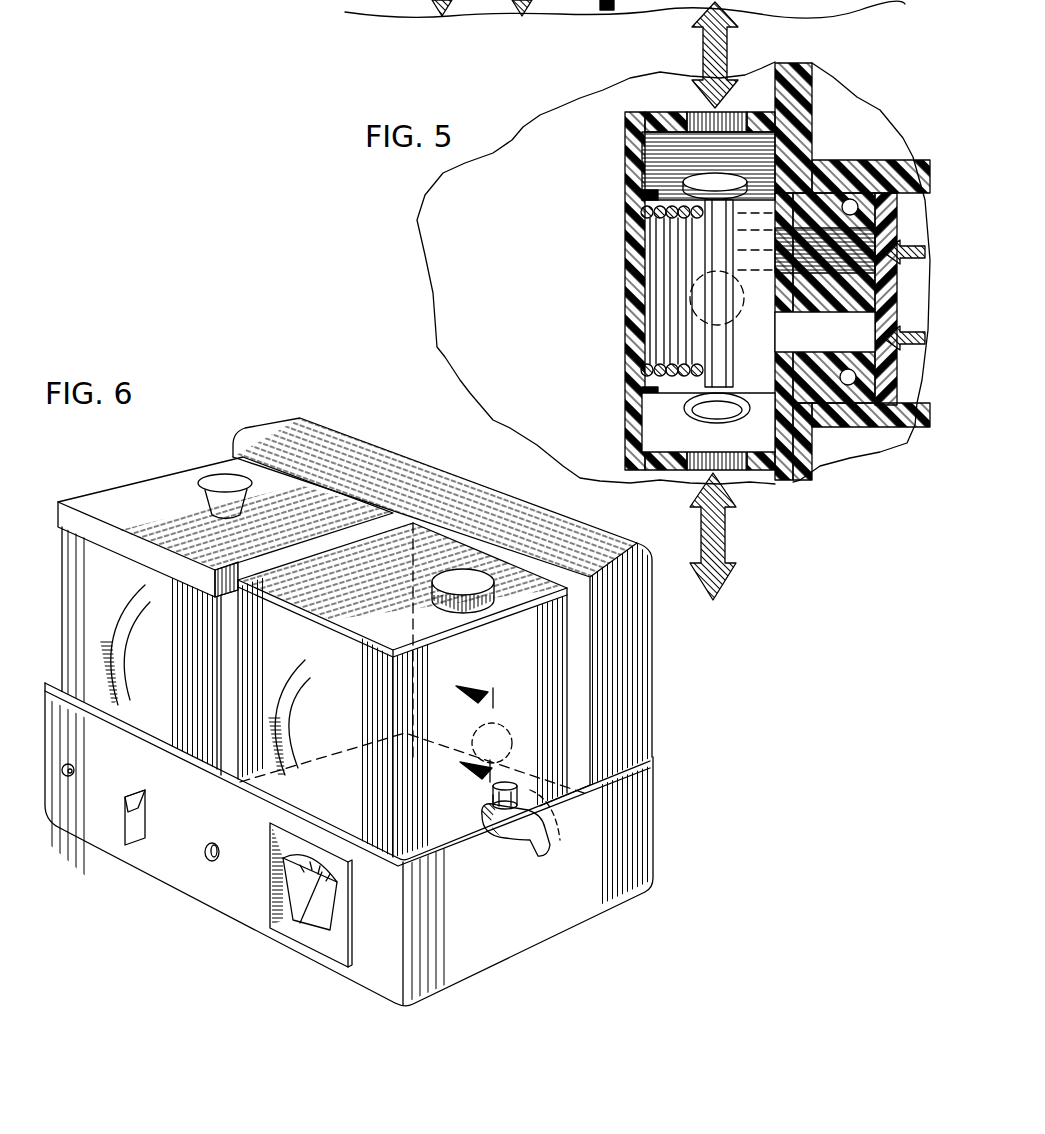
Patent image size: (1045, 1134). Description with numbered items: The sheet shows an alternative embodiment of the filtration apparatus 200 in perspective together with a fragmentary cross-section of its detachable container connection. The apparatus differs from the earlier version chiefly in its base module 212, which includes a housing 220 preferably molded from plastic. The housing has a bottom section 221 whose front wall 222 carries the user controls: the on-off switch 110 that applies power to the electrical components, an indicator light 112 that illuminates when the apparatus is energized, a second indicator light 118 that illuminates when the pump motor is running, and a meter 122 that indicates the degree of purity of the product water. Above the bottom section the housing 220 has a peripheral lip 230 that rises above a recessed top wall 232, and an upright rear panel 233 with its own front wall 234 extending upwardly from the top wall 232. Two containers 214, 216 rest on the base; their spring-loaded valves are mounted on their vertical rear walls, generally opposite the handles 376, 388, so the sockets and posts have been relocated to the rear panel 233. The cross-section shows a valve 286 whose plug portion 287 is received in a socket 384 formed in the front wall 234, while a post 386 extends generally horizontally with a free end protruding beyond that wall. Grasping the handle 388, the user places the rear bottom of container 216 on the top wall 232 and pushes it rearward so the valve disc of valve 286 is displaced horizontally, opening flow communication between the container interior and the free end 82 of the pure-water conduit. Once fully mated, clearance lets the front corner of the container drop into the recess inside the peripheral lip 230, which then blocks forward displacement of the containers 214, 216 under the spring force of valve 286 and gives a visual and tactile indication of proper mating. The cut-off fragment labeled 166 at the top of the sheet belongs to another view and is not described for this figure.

In FIG. 5, the free end of conduit 82 is at (822, 170).
In FIG. 5, the nozzle 166 is at (625, 9).
In FIG. 6, the filtration apparatus 200 is at (442, 578).
In FIG. 6, the base module 212 is at (388, 815).
In FIG. 6, the container 214 is at (201, 616).
In FIG. 5, the container 216 is at (772, 70).
In FIG. 6, the container 216 is at (442, 690).
In FIG. 6, the housing 220 is at (642, 772).
In FIG. 6, the bottom section 221 is at (559, 944).
In FIG. 6, the front wall 222 is at (218, 885).
In FIG. 6, the peripheral lip 230 is at (432, 855).
In FIG. 6, the top wall 232 is at (540, 819).
In FIG. 6, the rear panel 233 is at (668, 664).
In FIG. 5, the front wall of rear panel 234 is at (796, 470).
In FIG. 6, the front wall of rear panel 234 is at (437, 555).
In FIG. 5, the valve 286 is at (604, 163).
In FIG. 6, the valve 286 is at (502, 725).
In FIG. 5, the plug portion 287 is at (825, 250).
In FIG. 6, the handle 376 is at (118, 640).
In FIG. 5, the socket 384 is at (830, 418).
In FIG. 5, the post 386 is at (768, 305).
In FIG. 6, the handle 388 is at (290, 722).
In FIG. 6, the switch 110 is at (145, 793).
In FIG. 6, the indicator light 112 is at (72, 778).
In FIG. 6, the indicator light 118 is at (218, 843).
In FIG. 6, the meter 122 is at (346, 912).